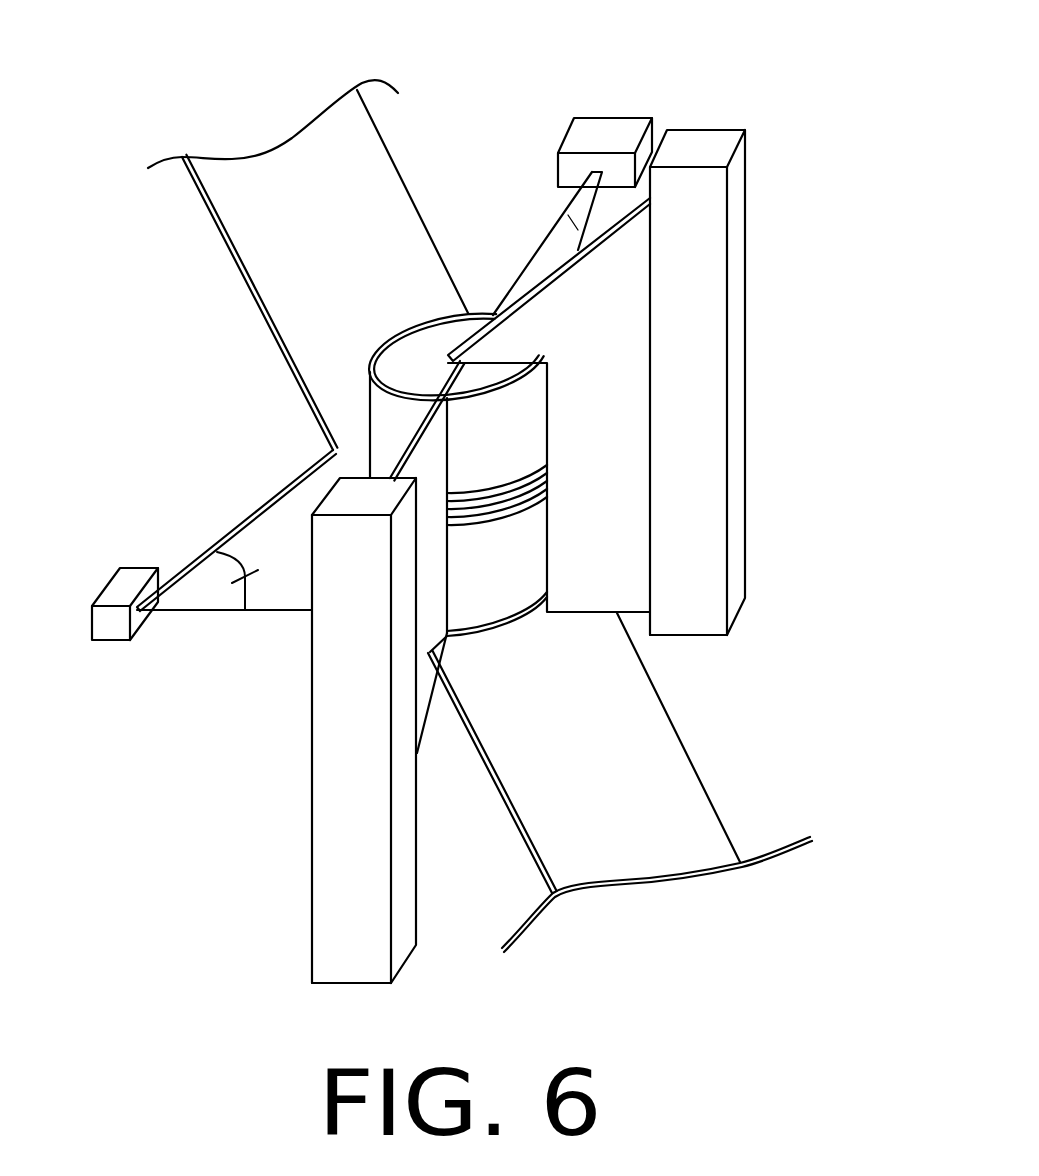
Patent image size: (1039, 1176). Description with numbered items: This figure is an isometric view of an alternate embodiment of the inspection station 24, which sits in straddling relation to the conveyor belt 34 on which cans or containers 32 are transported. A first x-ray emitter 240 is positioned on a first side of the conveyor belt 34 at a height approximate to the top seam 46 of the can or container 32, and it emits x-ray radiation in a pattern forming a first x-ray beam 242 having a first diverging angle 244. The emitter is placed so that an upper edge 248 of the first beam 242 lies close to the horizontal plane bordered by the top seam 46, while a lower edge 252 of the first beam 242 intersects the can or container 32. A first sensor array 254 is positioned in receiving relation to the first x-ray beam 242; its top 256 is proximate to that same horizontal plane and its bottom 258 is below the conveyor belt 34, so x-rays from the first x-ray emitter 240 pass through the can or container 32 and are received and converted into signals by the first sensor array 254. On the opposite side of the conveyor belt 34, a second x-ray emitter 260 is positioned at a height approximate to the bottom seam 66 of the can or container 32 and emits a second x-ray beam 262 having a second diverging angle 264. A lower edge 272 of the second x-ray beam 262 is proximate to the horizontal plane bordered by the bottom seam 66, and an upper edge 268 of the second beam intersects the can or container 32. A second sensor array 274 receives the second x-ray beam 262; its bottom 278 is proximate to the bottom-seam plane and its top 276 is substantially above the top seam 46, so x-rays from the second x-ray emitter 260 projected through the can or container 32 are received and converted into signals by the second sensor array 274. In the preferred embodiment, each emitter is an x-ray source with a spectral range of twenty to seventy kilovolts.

The inspection station 24 is at (464, 56).
The can or container 32 is at (422, 362).
The conveyor belt 34 is at (660, 805).
The top seam 46 is at (377, 367).
The bottom seam 66 is at (540, 653).
The first x-ray emitter 240 is at (611, 133).
The first x-ray beam 242 is at (428, 463).
The first diverging angle 244 is at (577, 223).
The upper edge of the first beam 248 is at (518, 278).
The lower edge of the first beam 252 is at (433, 713).
The first sensor array 254 is at (332, 782).
The top of the first sensor array 256 is at (355, 500).
The bottom of the first sensor array 258 is at (350, 985).
The second x-ray emitter 260 is at (113, 641).
The second x-ray beam 262 is at (620, 278).
The second diverging angle 264 is at (258, 585).
The upper edge of the second beam 268 is at (200, 553).
The lower edge of the second x-ray beam 272 is at (215, 612).
The second sensor array 274 is at (740, 478).
The top of the second sensor array 276 is at (693, 150).
The bottom of the second sensor array 278 is at (735, 623).